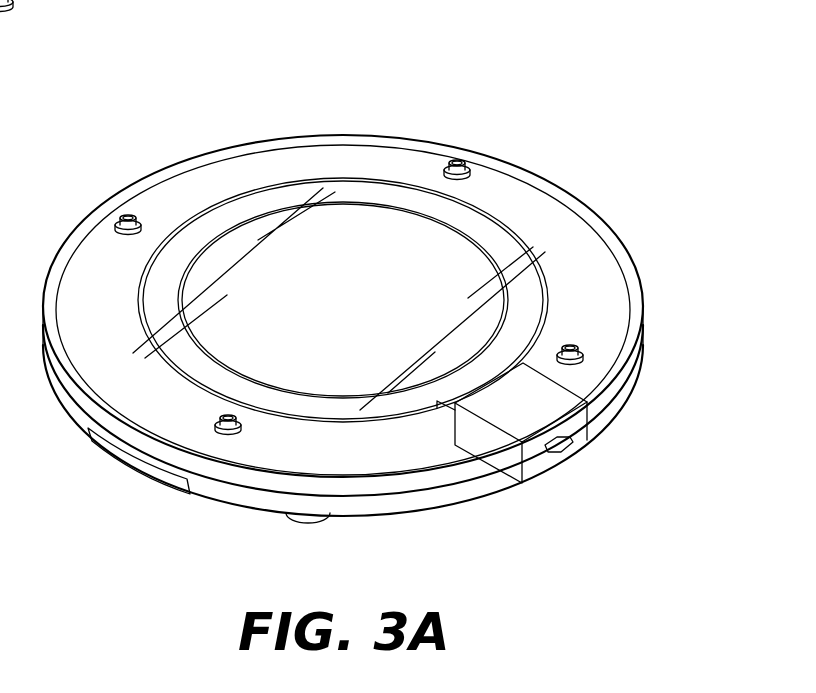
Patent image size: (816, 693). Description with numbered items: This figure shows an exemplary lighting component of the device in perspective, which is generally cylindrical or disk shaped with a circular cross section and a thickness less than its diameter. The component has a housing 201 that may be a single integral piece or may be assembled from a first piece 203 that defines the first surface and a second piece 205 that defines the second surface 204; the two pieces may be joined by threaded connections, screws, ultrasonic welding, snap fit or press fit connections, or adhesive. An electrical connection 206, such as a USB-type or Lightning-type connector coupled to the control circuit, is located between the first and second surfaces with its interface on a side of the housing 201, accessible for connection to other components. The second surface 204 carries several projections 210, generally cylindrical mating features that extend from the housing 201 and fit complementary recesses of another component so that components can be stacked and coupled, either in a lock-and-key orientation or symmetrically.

The housing 201 is at (180, 168).
The first piece 203 is at (457, 493).
The second surface 204 is at (345, 165).
The second piece 205 is at (620, 378).
The electrical connection 206 is at (547, 412).
The projection 210 is at (458, 160).